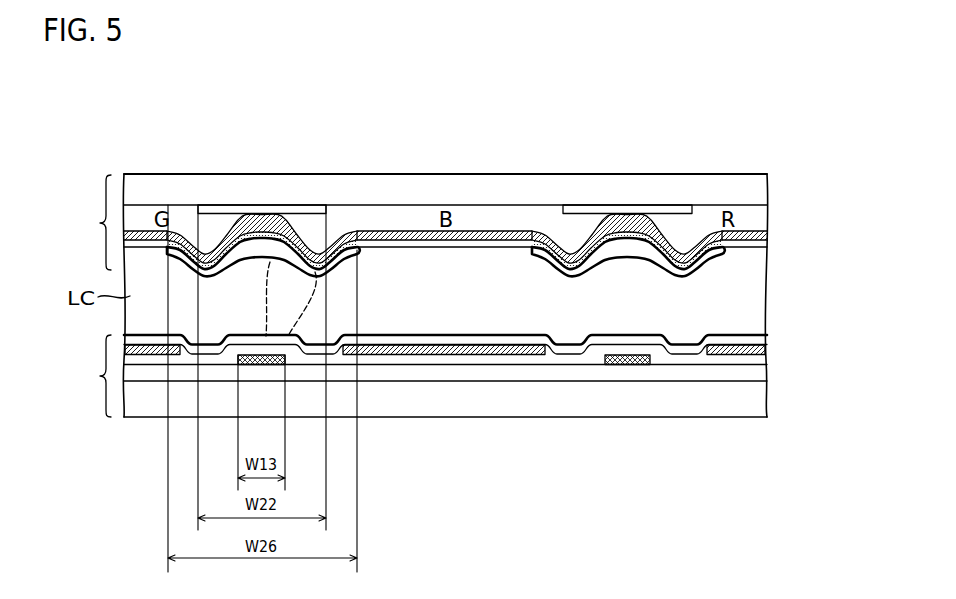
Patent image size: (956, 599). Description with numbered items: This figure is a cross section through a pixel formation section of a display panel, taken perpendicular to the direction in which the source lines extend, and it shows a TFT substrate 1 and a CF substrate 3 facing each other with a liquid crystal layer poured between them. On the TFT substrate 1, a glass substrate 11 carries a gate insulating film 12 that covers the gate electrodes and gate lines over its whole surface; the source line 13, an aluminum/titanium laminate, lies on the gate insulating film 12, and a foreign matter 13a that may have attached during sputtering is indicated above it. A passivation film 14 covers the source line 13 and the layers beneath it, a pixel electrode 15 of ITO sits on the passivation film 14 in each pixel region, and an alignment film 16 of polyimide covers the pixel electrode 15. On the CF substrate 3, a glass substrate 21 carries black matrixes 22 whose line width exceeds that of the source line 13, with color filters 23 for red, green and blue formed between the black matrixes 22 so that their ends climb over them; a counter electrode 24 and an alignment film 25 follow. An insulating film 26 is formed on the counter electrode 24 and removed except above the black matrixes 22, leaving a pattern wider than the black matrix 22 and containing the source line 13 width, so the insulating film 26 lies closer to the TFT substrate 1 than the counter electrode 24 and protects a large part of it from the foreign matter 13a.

The glass substrate 21 is at (758, 190).
The black matrixes 22 is at (263, 213).
The color filters 23 is at (758, 217).
The counter electrode 24 is at (760, 238).
The alignment film 25 is at (758, 247).
The insulating film 26 is at (360, 258).
The alignment film 16 is at (760, 334).
The pixel electrode 15 is at (758, 352).
The passivation film 14 is at (758, 360).
The source line 13 is at (252, 355).
The foreign matter 13a is at (318, 291).
The gate insulating film 12 is at (758, 378).
The glass substrate 11 is at (758, 404).
The CF substrate 3 is at (98, 222).
The TFT substrate 1 is at (98, 376).